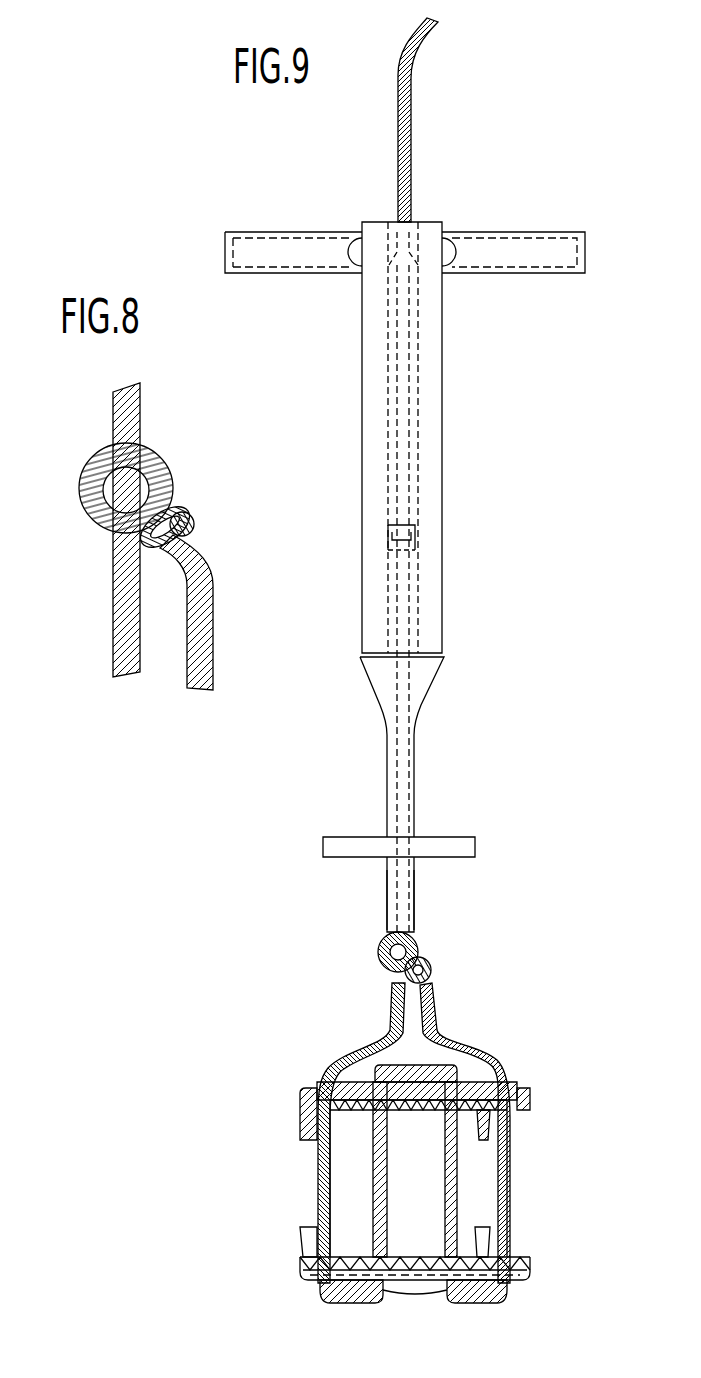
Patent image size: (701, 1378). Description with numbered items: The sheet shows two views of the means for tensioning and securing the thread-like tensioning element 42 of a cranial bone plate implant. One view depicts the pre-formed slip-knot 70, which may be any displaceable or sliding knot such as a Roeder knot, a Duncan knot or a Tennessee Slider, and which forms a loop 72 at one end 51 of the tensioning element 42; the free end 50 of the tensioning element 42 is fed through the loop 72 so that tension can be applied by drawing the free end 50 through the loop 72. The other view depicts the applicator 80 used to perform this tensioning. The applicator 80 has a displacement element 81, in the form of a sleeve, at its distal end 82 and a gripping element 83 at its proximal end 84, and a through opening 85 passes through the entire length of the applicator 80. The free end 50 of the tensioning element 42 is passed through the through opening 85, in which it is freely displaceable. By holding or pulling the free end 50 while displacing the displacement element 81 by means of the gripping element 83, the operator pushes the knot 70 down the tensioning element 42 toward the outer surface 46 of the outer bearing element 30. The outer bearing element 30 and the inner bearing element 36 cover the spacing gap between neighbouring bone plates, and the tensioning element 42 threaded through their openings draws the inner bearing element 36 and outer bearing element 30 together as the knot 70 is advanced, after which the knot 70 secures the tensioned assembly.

In FIG. 9, the outer bearing element 30 is at (286, 1103).
In FIG. 9, the inner bearing element 36 is at (545, 1256).
In FIG. 8, the thread-like tensioning element 42 is at (100, 592).
In FIG. 9, the thread-like tensioning element 42 is at (450, 1038).
In FIG. 9, the outer surface of the outer bearing element 46 is at (523, 1081).
In FIG. 8, the free end of the tensioning element 50 is at (133, 413).
In FIG. 9, the free end of the tensioning element 50 is at (411, 77).
In FIG. 8, the end of the tensioning element 51 is at (167, 473).
In FIG. 8, the pre-formed slip-knot 70 is at (212, 507).
In FIG. 9, the pre-formed slip-knot 70 is at (452, 980).
In FIG. 8, the loop 72 is at (83, 453).
In FIG. 9, the loop 72 is at (418, 944).
In FIG. 9, the applicator 80 is at (468, 434).
In FIG. 9, the displacement element 81 is at (425, 898).
In FIG. 9, the distal end 82 is at (386, 898).
In FIG. 9, the gripping element 83 is at (500, 220).
In FIG. 9, the proximal end 84 is at (444, 325).
In FIG. 9, the through opening 85 is at (402, 503).